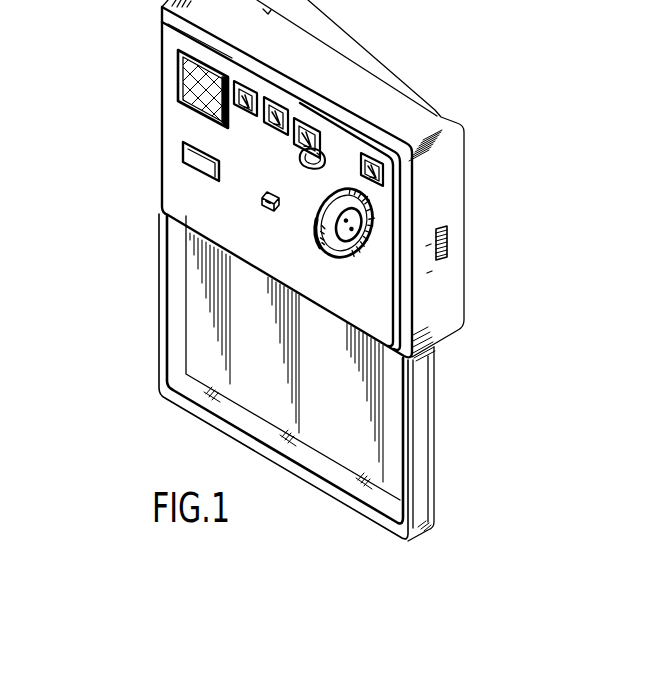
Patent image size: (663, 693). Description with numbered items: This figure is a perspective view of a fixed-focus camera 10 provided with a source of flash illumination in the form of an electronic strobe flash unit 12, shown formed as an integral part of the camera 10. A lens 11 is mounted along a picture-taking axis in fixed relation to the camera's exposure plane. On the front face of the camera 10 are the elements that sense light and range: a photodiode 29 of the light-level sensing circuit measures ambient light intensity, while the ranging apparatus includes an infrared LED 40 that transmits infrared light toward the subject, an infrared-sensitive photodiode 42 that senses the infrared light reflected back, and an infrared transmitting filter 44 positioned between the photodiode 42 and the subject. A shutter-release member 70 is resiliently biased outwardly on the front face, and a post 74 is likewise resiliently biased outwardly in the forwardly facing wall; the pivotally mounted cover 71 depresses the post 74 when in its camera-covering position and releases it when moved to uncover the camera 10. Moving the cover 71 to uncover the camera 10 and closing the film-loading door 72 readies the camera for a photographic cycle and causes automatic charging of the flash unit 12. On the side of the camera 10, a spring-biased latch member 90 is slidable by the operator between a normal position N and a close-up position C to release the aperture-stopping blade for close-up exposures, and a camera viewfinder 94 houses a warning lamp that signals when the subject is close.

The camera 10 is at (437, 80).
The lens 11 is at (318, 242).
The electronic strobe flash unit 12 is at (160, 81).
The photodiode 29 is at (244, 81).
The infrared LED 40 is at (275, 97).
The infrared transmitting filter 44 is at (305, 123).
The infrared-sensitive photodiode 42 is at (323, 163).
The shutter-release member 70 is at (204, 164).
The cover 71 is at (424, 396).
The film-loading door 72 is at (374, 77).
The post 74 is at (253, 210).
The latch member 90 is at (448, 247).
The camera viewfinder 94 is at (373, 186).